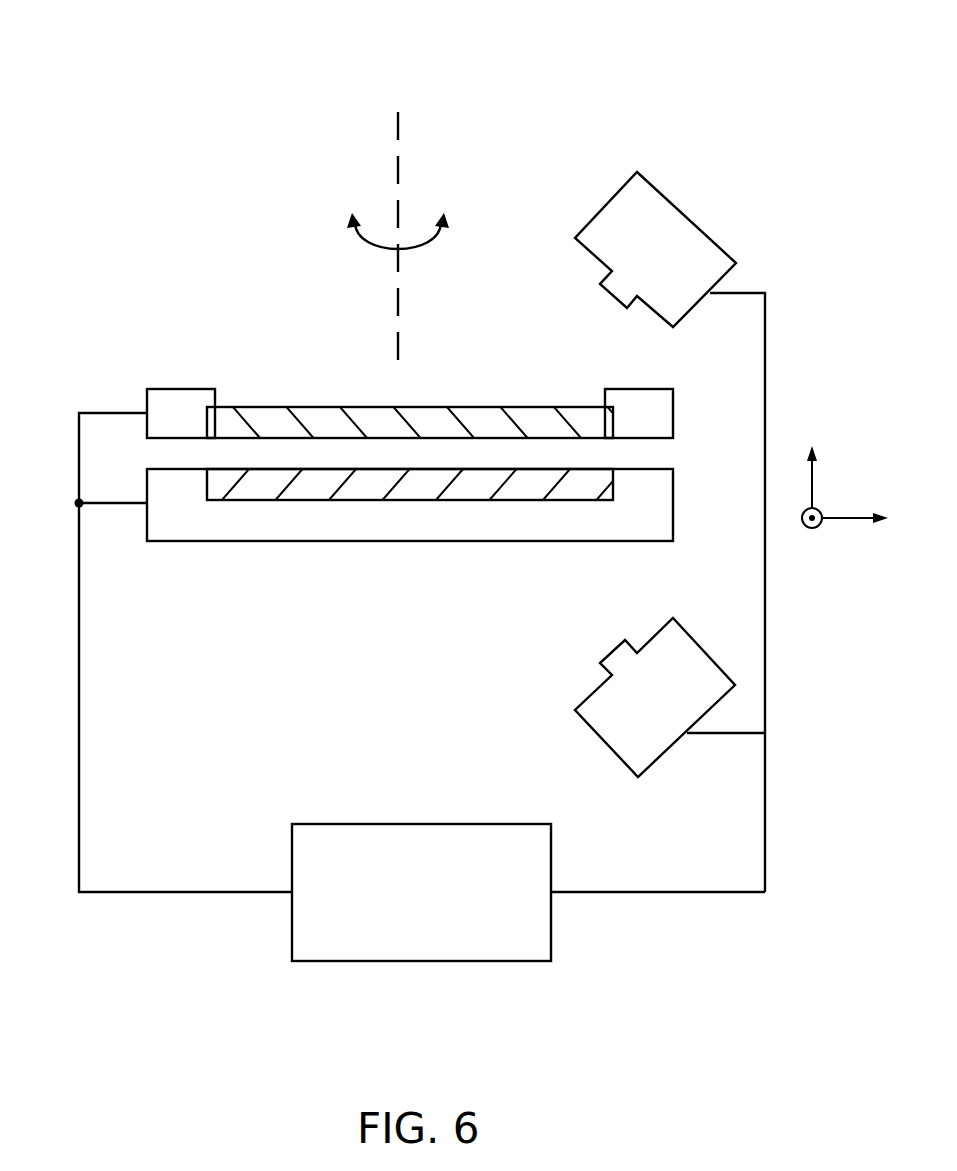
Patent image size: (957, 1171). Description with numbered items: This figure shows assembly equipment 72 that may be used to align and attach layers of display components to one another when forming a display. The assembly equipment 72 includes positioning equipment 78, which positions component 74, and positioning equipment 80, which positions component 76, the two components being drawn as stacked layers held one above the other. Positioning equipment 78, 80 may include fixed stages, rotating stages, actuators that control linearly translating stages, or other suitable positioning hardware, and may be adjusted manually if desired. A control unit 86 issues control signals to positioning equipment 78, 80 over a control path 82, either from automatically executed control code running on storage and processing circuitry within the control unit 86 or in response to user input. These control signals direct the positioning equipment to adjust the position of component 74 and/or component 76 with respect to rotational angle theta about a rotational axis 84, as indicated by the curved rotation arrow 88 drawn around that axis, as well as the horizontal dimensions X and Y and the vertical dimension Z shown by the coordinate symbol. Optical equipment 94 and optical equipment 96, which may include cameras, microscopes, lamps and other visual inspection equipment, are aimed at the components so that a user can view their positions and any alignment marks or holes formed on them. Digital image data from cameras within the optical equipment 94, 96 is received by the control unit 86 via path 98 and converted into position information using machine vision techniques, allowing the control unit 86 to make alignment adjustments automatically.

The assembly equipment 72 is at (720, 62).
The component 74 is at (478, 406).
The component 76 is at (427, 485).
The positioning equipment 78 is at (174, 389).
The positioning equipment 80 is at (187, 522).
The control path 82 is at (176, 893).
The rotational axis 84 is at (398, 157).
The control unit 86 is at (355, 962).
The rotation direction 88 is at (372, 247).
The optical equipment 94 is at (679, 206).
The optical equipment 96 is at (663, 755).
The path 98 is at (766, 680).